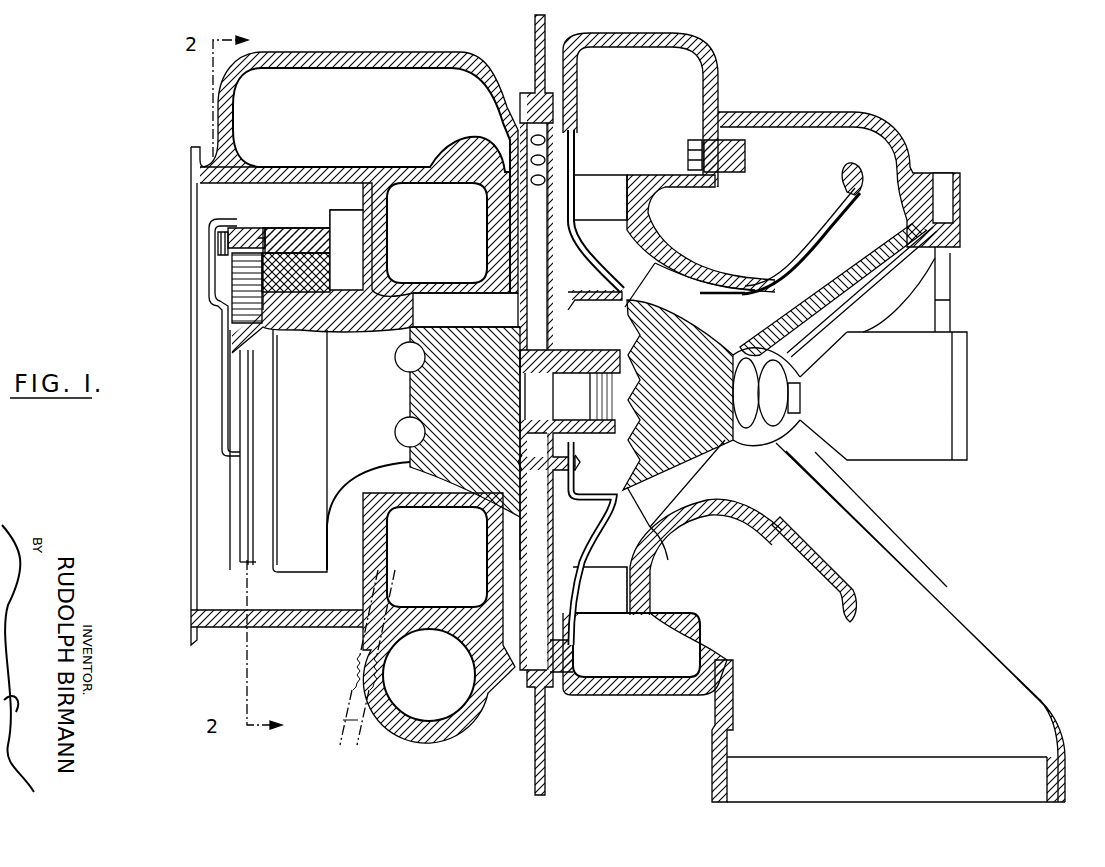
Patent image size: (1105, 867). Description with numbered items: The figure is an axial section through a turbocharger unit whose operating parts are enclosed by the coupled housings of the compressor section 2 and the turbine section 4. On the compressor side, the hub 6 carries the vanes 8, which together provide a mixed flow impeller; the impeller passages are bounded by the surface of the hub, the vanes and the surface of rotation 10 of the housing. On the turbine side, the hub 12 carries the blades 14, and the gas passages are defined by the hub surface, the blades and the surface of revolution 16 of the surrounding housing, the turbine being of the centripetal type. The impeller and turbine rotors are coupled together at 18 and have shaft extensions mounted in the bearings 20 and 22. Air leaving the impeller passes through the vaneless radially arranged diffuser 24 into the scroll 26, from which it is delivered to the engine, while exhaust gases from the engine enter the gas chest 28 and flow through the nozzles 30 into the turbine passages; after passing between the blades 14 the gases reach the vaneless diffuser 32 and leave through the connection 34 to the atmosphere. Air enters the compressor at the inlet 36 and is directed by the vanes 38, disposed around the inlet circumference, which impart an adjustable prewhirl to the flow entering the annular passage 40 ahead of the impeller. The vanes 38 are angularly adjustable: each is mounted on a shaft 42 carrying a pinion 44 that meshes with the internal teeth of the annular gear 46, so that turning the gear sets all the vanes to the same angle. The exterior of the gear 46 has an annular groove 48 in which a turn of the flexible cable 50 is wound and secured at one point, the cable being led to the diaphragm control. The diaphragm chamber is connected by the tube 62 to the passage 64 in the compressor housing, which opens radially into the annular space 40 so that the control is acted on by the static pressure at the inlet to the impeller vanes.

The compressor section 2 is at (340, 48).
The turbine section 4 is at (808, 104).
The hub 6 is at (412, 390).
The vanes 8 is at (438, 305).
The surface of rotation 10 is at (462, 505).
The hub 12 is at (720, 347).
The blades 14 is at (704, 276).
The surface of revolution 16 is at (680, 296).
The coupling 18 is at (582, 352).
The bearing 20 is at (382, 436).
The bearing 22 is at (866, 412).
The vaneless radially arranged diffuser 24 is at (498, 210).
The scroll 26 is at (386, 126).
The gas chest 28 is at (700, 100).
The nozzles 30 is at (598, 192).
The vaneless diffuser 32 is at (835, 228).
The connection 34 is at (1010, 708).
The compressor inlet 36 is at (205, 205).
The vanes 38 is at (380, 256).
The annular passage 40 is at (390, 292).
The shafts 42 is at (300, 238).
The pinions 44 is at (272, 228).
The annular gear 46 is at (207, 230).
The annular groove 48 is at (236, 220).
The flexible cable 50 is at (246, 222).
The tube 62 is at (340, 722).
The passage 64 is at (380, 504).